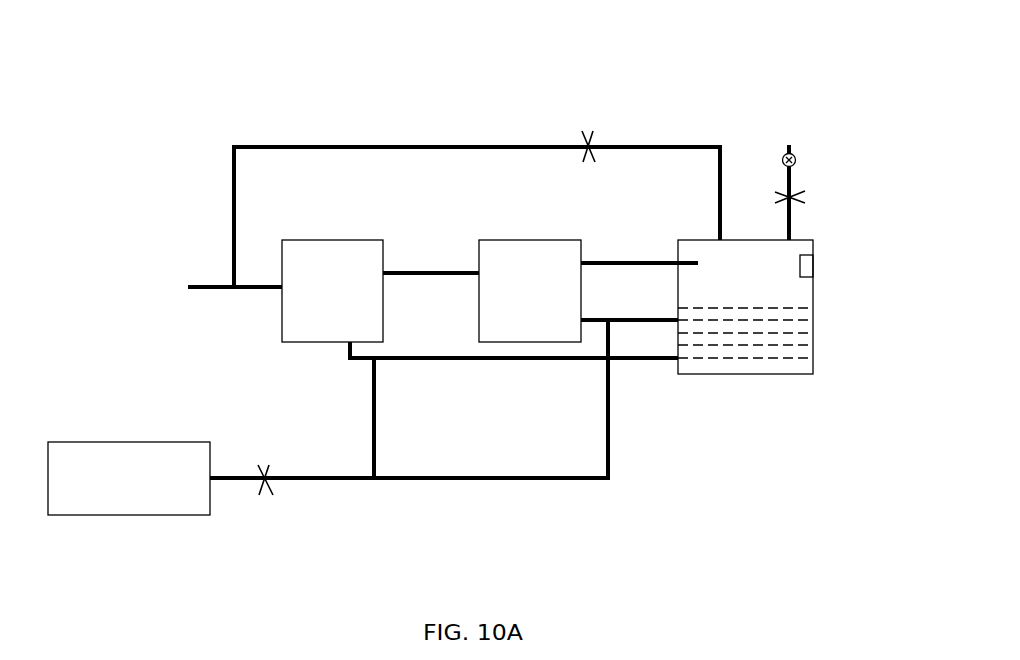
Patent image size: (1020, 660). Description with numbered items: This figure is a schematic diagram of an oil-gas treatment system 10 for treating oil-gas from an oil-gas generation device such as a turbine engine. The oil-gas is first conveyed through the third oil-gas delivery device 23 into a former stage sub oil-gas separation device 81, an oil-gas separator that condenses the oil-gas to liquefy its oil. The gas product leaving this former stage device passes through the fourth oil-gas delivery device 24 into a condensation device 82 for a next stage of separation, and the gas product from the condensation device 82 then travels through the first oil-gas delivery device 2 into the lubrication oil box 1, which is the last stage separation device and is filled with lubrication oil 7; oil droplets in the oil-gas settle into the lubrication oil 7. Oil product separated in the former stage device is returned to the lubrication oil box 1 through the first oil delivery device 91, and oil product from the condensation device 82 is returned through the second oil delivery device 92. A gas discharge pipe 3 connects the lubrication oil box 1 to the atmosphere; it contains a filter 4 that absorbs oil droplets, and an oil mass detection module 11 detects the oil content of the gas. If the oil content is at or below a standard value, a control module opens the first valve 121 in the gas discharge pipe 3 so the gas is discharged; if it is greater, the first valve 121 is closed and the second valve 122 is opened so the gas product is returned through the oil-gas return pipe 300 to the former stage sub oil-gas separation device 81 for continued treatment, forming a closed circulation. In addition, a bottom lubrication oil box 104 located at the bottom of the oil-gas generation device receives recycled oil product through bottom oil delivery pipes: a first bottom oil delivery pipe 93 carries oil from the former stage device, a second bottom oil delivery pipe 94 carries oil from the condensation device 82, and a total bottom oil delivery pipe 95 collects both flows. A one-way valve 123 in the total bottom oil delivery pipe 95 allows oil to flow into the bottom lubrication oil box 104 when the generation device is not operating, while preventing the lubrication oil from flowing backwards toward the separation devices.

The oil-gas treatment system 10 is at (146, 46).
The lubrication oil box 1 is at (813, 363).
The first oil-gas delivery device 2 is at (628, 263).
The gas discharge pipe 3 is at (789, 217).
The filter 4 is at (795, 157).
The lubrication oil 7 is at (803, 328).
The oil mass detection module 11 is at (813, 266).
The third oil-gas delivery device 23 is at (193, 287).
The fourth oil-gas delivery device 24 is at (424, 273).
The former stage sub oil-gas separation device 81 is at (332, 342).
The condensation device 82 is at (533, 342).
The first oil delivery device 91 is at (423, 358).
The second oil delivery device 92 is at (628, 320).
The first bottom oil delivery pipe 93 is at (374, 452).
The second bottom oil delivery pipe 94 is at (532, 478).
The total bottom oil delivery pipe 95 is at (300, 478).
The bottom lubrication oil box 104 is at (126, 515).
The first valve 121 is at (795, 195).
The second valve 122 is at (591, 141).
The one-way valve 123 is at (267, 483).
The oil-gas return pipe 300 is at (344, 147).